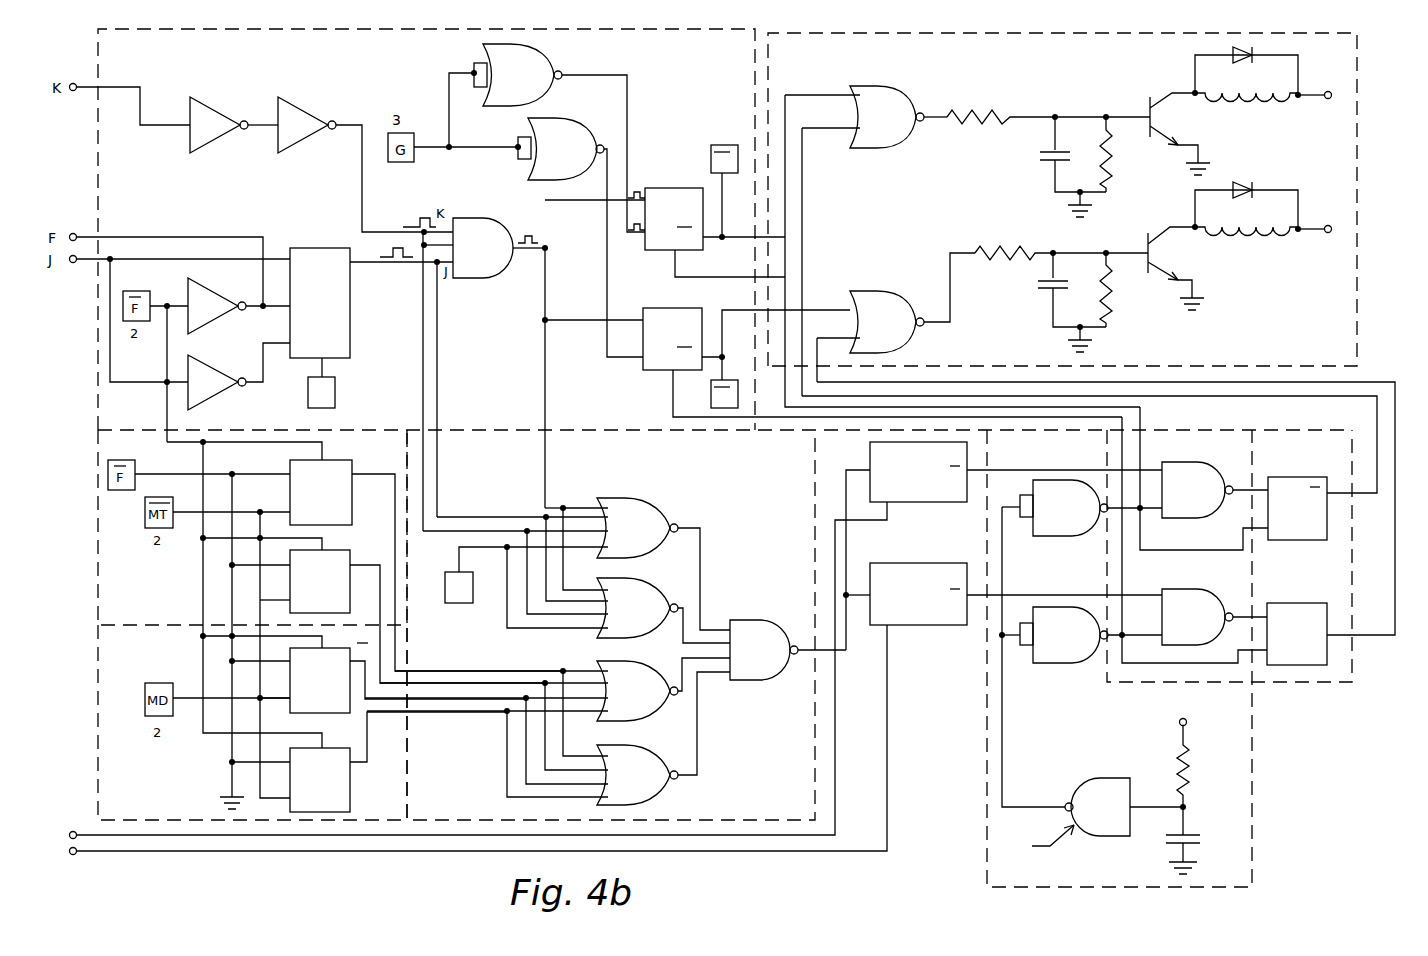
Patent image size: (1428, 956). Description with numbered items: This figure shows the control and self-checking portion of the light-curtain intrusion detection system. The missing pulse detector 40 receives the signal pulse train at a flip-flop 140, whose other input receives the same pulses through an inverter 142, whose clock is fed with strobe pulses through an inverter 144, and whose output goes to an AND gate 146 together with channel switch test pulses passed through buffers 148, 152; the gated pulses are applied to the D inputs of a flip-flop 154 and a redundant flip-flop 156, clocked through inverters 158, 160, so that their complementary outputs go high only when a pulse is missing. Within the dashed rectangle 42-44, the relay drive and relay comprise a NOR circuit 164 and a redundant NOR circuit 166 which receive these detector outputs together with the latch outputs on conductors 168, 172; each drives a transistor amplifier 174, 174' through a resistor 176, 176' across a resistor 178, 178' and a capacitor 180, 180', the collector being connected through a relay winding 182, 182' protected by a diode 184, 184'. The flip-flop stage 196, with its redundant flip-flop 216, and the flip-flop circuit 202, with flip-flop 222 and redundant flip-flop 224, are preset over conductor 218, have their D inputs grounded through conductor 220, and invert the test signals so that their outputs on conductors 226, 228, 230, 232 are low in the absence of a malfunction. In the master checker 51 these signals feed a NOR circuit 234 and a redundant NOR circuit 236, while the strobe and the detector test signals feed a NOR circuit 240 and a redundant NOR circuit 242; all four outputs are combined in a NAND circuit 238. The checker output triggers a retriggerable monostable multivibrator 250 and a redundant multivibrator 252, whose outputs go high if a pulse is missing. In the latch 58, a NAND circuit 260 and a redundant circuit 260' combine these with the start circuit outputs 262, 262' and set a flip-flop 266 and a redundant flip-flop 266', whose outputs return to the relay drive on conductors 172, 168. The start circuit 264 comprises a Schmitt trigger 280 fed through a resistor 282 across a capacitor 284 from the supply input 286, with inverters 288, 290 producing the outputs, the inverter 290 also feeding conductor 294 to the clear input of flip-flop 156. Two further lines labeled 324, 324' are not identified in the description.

The missing pulse detector 40 is at (96, 175).
The relay drive and relay 42-44 is at (917, 33).
The master checker 51 is at (462, 822).
The latch 58 is at (1318, 684).
The flip-flop 140 is at (352, 325).
The inverter 142 is at (213, 385).
The inverter 144 is at (212, 308).
The AND gate 146 is at (483, 228).
The buffer 148 is at (203, 118).
The buffer 152 is at (292, 122).
The flip-flop 154 is at (672, 186).
The redundant flip-flop 156 is at (672, 318).
The inverter 158 is at (520, 72).
The inverter 160 is at (560, 130).
The NOR circuit 164 is at (878, 100).
The redundant NOR circuit 166 is at (878, 300).
The conductor 168 is at (1395, 625).
The conductor 172 is at (1377, 470).
The transistor amplifier 174 is at (1164, 115).
The redundant transistor amplifier 174' is at (1157, 254).
The resistor 176 is at (1048, 98).
The resistor 176' is at (1056, 232).
The resistor 178 is at (1132, 154).
The resistor 178' is at (1134, 295).
The capacitor 180 is at (1042, 167).
The capacitor 180' is at (1045, 302).
The winding 182 is at (1262, 117).
The winding 182' is at (1262, 248).
The protective diode 184 is at (1270, 66).
The protective diode 184' is at (1251, 195).
The flip-flop stage 196 is at (95, 722).
The flip-flop circuit 202 is at (95, 462).
The redundant flip-flop 216 is at (342, 740).
The conductor 218 is at (207, 452).
The conductor 220 is at (240, 487).
The flip-flop 222 is at (325, 468).
The redundant flip-flop 224 is at (325, 558).
The conductor 226 is at (495, 713).
The conductor 228 is at (460, 700).
The conductor 230 is at (488, 681).
The conductor 232 is at (438, 668).
The NOR circuit 234 is at (625, 715).
The redundant NOR circuit 236 is at (660, 790).
The NAND circuit 238 is at (755, 682).
The NOR circuit 240 is at (645, 512).
The redundant NOR circuit 242 is at (622, 595).
The retriggerable monostable multivibrator 250 is at (916, 503).
The redundant retriggerable monostable multivibrator 252 is at (932, 627).
The NAND circuit 260 is at (1215, 480).
The redundant NAND circuit 260' is at (1214, 605).
The start circuit output 262 is at (1202, 478).
The redundant start circuit output 262' is at (1192, 561).
The start circuit 264 is at (1253, 790).
The flip-flop 266 is at (1299, 492).
The redundant flip-flop 266' is at (1301, 620).
The Schmitt trigger 280 is at (1104, 790).
The resistor 282 is at (1178, 770).
The capacitor 284 is at (1200, 838).
The input 286 is at (1062, 840).
The inverter 288 is at (1062, 538).
The redundant inverter 290 is at (1062, 665).
The conductor 294 is at (673, 390).
The input terminal 324 is at (463, 670).
The input terminal 324' is at (502, 758).